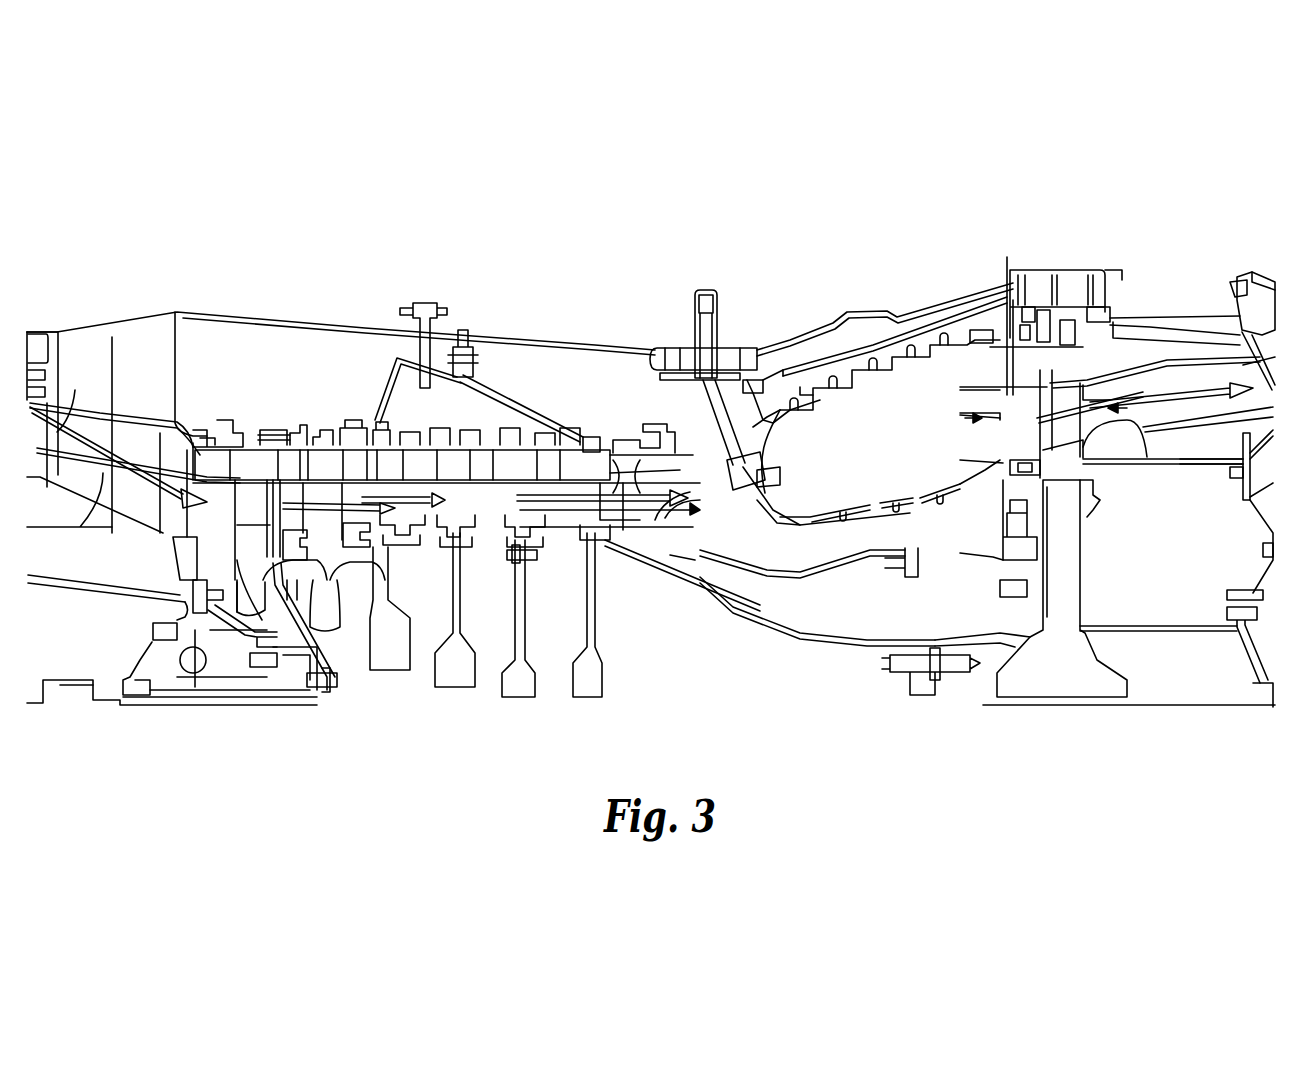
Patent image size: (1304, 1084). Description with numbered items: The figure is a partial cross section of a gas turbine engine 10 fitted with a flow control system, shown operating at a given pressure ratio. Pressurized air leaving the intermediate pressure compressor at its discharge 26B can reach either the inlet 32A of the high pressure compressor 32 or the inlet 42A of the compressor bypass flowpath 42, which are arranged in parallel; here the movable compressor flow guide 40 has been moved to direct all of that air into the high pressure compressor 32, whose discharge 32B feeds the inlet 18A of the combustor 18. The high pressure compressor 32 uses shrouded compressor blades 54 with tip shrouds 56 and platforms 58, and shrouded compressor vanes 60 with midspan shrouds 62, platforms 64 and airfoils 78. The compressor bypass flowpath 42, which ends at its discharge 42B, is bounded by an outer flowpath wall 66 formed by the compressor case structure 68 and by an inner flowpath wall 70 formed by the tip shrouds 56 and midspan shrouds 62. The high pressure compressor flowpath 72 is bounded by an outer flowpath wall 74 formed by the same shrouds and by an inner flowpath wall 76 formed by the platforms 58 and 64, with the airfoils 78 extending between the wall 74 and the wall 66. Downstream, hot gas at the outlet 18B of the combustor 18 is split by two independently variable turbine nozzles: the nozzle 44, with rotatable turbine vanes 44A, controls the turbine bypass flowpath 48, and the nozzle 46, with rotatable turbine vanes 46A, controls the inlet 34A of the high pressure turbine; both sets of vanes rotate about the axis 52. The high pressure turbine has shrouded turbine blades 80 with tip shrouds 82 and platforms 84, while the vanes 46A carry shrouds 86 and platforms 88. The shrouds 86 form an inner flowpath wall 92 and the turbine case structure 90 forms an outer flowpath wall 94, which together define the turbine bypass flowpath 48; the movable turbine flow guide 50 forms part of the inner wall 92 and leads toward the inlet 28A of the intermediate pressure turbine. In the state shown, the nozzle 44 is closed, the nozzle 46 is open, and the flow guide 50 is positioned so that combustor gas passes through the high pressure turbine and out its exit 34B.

The gas turbine engine 10 is at (1135, 187).
The combustor 18 is at (935, 287).
The inlet of combustor 18A is at (753, 500).
The outlet of combustor 18B is at (1003, 397).
The discharge of intermediate pressure compressor 26B is at (75, 388).
The inlet of intermediate pressure turbine 28A is at (1241, 374).
The high pressure compressor 32 is at (331, 745).
The inlet of high pressure compressor 32A is at (180, 603).
The discharge of high pressure compressor 32B is at (712, 543).
The inlet of high pressure turbine 34A is at (1007, 427).
The exit of high pressure turbine 34B is at (1127, 427).
The movable compressor flow guide 40 is at (133, 455).
The compressor bypass flowpath 42 is at (237, 420).
The inlet of compressor bypass flowpath 42A is at (205, 425).
The discharge of compressor bypass flowpath 42B is at (690, 457).
The independently variable turbine nozzle 44 is at (978, 363).
The rotatable turbine vanes 44A is at (1007, 400).
The independently variable turbine nozzle 46 is at (990, 432).
The rotatable turbine vanes 46A is at (1010, 420).
The turbine bypass flowpath 48 is at (1120, 318).
The movable turbine flow guide 50 is at (1183, 360).
The axis 52 is at (1010, 270).
The compressor blades 54 is at (275, 578).
The tip shrouds 56 is at (190, 513).
The platforms 58 is at (547, 523).
The compressor vanes 60 is at (482, 463).
The midspan shrouds 62 is at (535, 480).
The platforms 64 is at (463, 537).
The outer flowpath wall 66 is at (263, 463).
The compressor case structure 68 is at (307, 480).
The inner flowpath wall 70 is at (308, 457).
The high pressure compressor flowpath 72 is at (693, 517).
The outer flowpath wall 74 is at (287, 500).
The inner flowpath wall 76 is at (457, 520).
The airfoils 78 is at (398, 418).
The turbine blades 80 is at (1130, 447).
The tip shrouds 82 is at (1143, 379).
The platforms 84 is at (1103, 460).
The shrouds 86 is at (893, 303).
The platforms 88 is at (1003, 497).
The turbine case structure 90 is at (1037, 390).
The inner flowpath wall 92 is at (1088, 272).
The outer flowpath wall 94 is at (1003, 377).